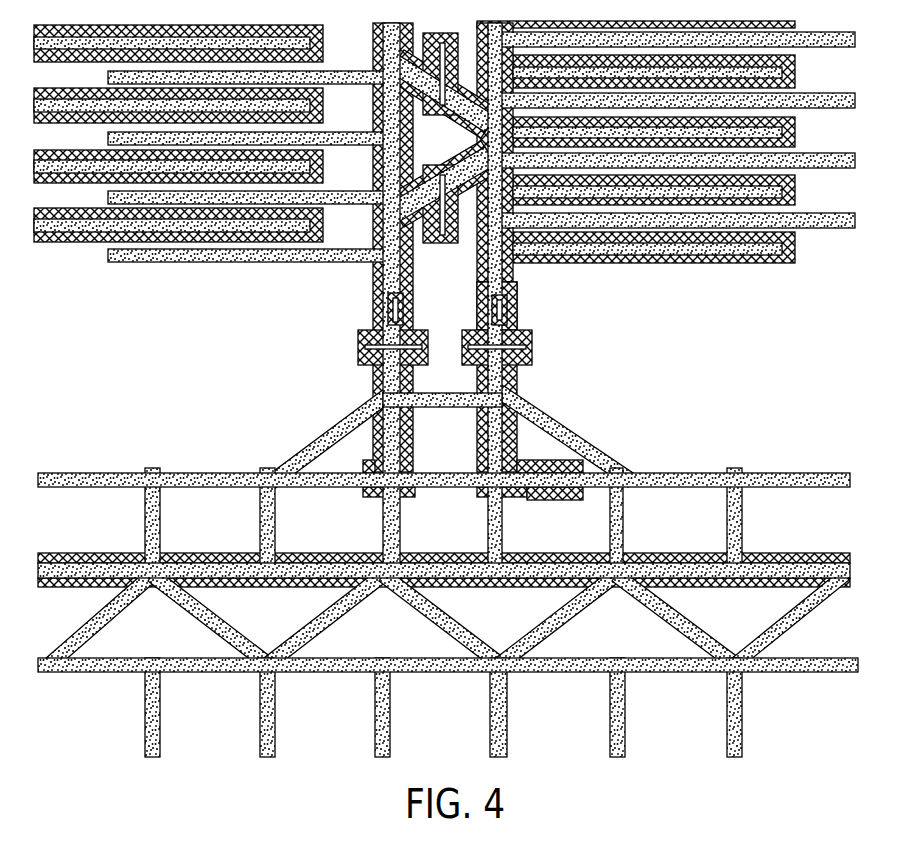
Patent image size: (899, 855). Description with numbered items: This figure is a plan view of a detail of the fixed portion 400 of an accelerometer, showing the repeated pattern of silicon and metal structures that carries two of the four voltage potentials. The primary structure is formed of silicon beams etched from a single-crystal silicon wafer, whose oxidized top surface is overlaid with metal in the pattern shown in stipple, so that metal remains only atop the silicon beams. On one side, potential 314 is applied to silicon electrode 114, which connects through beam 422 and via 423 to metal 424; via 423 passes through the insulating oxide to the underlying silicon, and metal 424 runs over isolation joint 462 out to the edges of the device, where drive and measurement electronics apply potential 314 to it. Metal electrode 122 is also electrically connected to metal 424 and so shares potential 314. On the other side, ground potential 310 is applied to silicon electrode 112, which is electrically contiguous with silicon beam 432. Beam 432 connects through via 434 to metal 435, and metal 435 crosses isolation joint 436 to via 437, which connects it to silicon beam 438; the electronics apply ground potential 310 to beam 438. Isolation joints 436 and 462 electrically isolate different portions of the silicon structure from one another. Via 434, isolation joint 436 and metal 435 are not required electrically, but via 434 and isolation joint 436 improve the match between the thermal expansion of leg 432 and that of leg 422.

The silicon electrode 114 is at (368, 68).
The silicon electrode 112 is at (577, 263).
The metal electrode 122 is at (722, 267).
The ground potential 310 is at (657, 263).
The fixed portion 400 is at (446, 389).
The beam 422 is at (373, 282).
The via 423 is at (397, 310).
The metal 424 is at (377, 442).
The silicon beam 432 is at (495, 270).
The via 434 is at (477, 293).
The metal 435 is at (503, 322).
The isolation joint 436 is at (530, 365).
The via 437 is at (548, 480).
The silicon beam 438 is at (683, 473).
The isolation joint 462 is at (368, 352).
The potential 314 is at (132, 553).